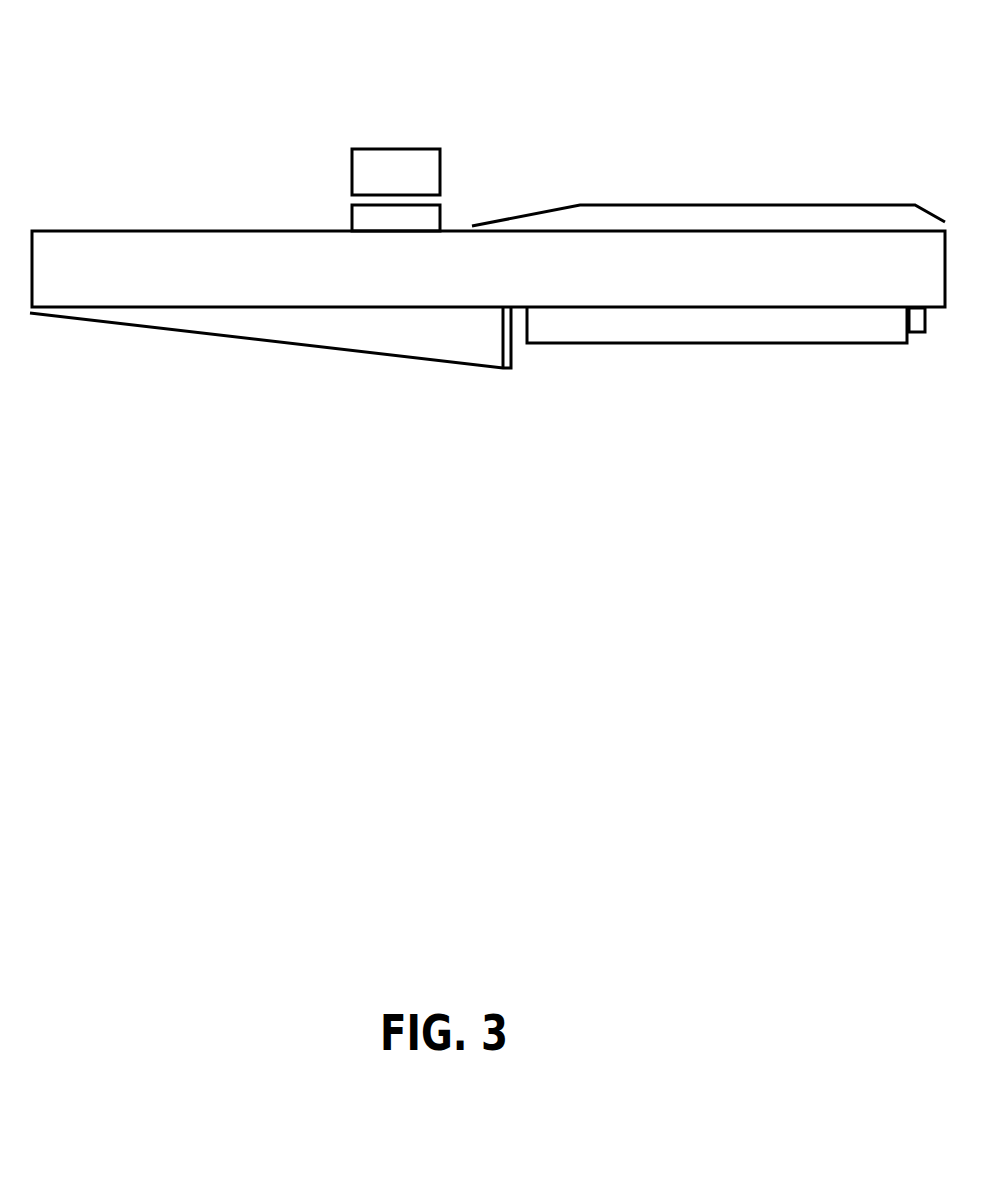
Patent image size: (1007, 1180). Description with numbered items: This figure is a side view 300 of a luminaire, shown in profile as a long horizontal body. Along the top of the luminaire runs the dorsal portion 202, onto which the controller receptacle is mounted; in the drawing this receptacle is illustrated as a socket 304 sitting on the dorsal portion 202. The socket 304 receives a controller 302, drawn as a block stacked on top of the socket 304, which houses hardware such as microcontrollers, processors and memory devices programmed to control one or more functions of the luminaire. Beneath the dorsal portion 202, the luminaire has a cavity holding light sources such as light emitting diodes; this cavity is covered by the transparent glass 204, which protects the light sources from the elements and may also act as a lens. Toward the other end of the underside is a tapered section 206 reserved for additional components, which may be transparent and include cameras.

The side view 300 is at (629, 72).
The dorsal portion 202 is at (803, 247).
The transparent glass 204 is at (770, 345).
The section 206 is at (452, 327).
The controller 302 is at (410, 157).
The socket 304 is at (350, 206).